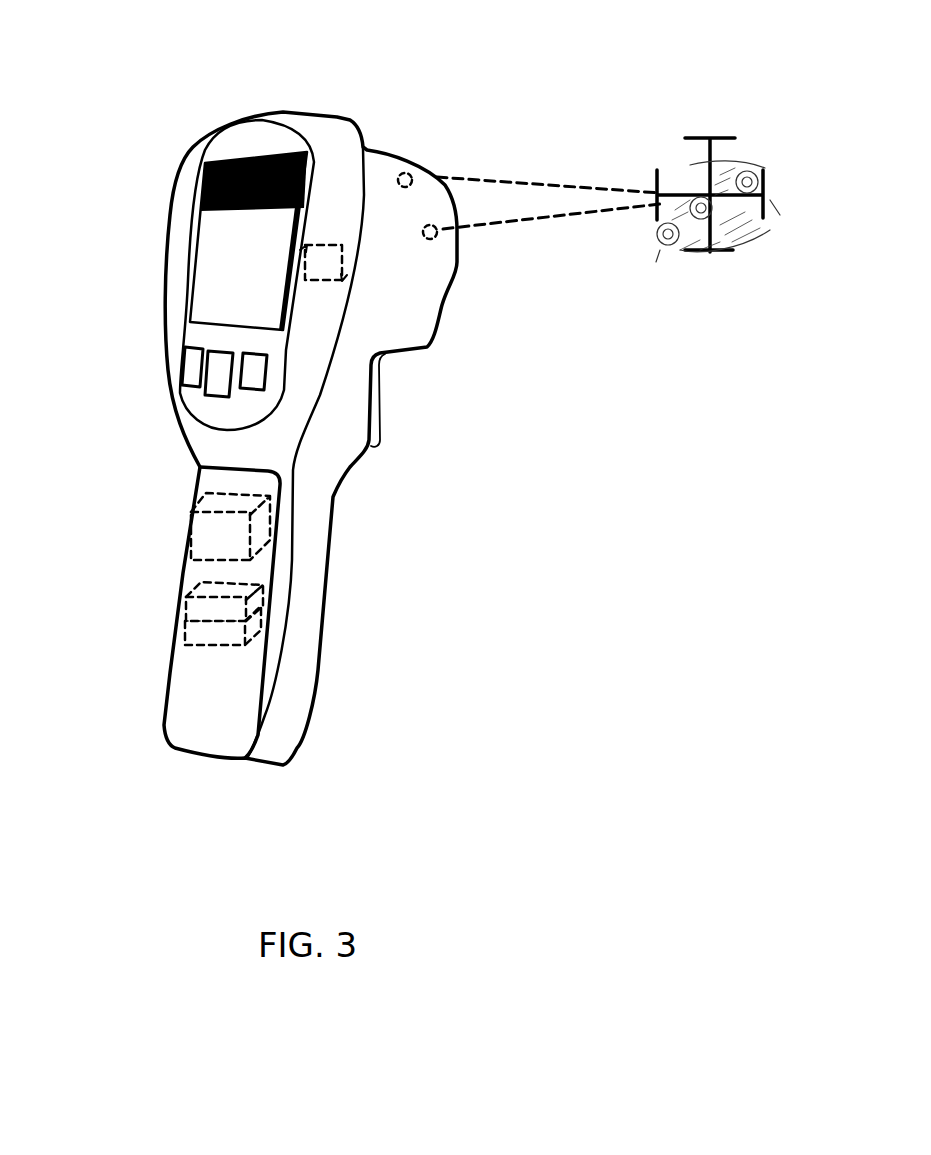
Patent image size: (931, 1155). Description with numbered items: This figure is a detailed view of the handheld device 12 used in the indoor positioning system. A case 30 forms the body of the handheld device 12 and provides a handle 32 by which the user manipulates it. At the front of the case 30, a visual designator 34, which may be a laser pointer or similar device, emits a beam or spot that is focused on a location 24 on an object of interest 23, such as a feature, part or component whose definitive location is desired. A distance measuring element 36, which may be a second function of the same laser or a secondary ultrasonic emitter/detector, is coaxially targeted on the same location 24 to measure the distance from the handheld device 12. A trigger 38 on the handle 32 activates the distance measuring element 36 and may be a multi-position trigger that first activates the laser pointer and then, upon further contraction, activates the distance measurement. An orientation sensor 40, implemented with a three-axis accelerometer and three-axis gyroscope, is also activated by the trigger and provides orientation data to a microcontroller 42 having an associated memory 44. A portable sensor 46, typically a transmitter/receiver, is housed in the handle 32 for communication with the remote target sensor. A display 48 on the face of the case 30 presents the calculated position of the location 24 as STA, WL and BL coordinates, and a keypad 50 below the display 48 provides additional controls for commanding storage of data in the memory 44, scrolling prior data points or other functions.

The handheld device 12 is at (282, 111).
The object of interest 23 is at (722, 200).
The location 24 is at (747, 178).
The case 30 is at (180, 420).
The handle 32 is at (288, 710).
The visual designator 34 is at (403, 172).
The distance measuring element 36 is at (428, 240).
The trigger 38 is at (380, 407).
The orientation sensor 40 is at (323, 248).
The microcontroller 42 is at (252, 605).
The memory 44 is at (260, 630).
The portable sensor 46 is at (260, 527).
The display 48 is at (228, 263).
The keypad 50 is at (220, 374).